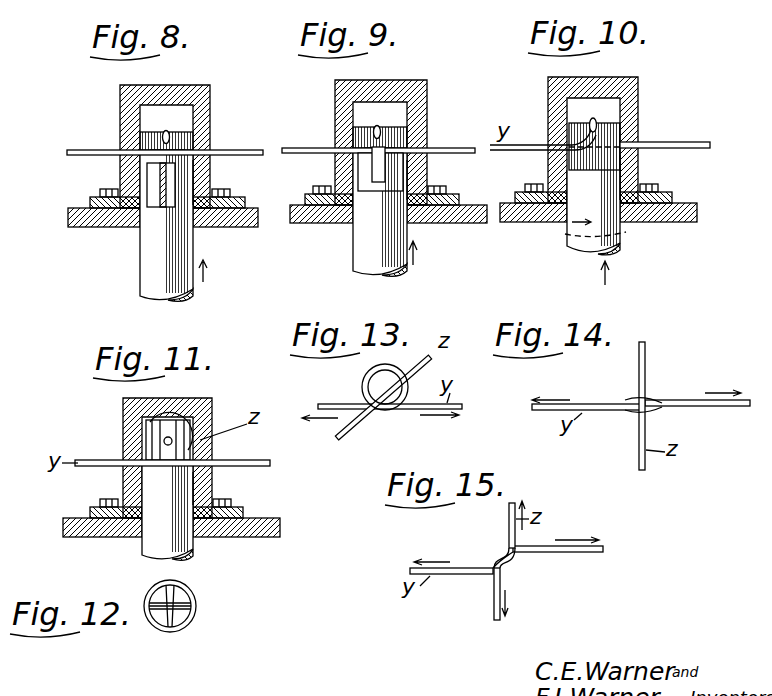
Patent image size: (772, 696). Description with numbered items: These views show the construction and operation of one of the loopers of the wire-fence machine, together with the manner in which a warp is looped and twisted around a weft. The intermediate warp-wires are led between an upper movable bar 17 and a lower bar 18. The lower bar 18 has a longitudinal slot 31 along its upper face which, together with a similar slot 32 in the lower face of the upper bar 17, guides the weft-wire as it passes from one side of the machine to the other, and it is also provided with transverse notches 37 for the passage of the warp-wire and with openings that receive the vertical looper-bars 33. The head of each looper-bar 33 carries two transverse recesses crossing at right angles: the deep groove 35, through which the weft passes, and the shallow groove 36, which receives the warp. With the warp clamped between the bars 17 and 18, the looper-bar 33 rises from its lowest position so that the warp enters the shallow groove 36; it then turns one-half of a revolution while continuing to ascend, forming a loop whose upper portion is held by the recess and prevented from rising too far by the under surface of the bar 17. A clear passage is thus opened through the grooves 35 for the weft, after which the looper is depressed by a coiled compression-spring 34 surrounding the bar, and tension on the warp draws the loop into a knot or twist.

In FIG. 8, the upper movable bar 17 is at (207, 91).
In FIG. 9, the upper movable bar 17 is at (424, 87).
In FIG. 10, the upper movable bar 17 is at (634, 82).
In FIG. 11, the upper movable bar 17 is at (209, 405).
In FIG. 8, the lower bar 18 is at (130, 175).
In FIG. 9, the lower bar 18 is at (338, 168).
In FIG. 10, the lower bar 18 is at (553, 166).
In FIG. 11, the lower bar 18 is at (124, 490).
In FIG. 8, the longitudinal slot 31 is at (170, 141).
In FIG. 9, the longitudinal slot 31 is at (388, 134).
In FIG. 8, the slot 32 is at (170, 135).
In FIG. 9, the slot 32 is at (380, 130).
In FIG. 8, the looper-bar 33 is at (150, 273).
In FIG. 9, the looper-bar 33 is at (362, 248).
In FIG. 10, the looper-bar 33 is at (595, 212).
In FIG. 11, the looper-bar 33 is at (160, 540).
In FIG. 12, the looper-bar 33 is at (197, 598).
In FIG. 8, the coiled compression-spring 34 is at (203, 178).
In FIG. 9, the coiled compression-spring 34 is at (412, 168).
In FIG. 10, the coiled compression-spring 34 is at (640, 163).
In FIG. 11, the coiled compression-spring 34 is at (212, 462).
In FIG. 8, the deep transverse recess 35 is at (161, 200).
In FIG. 9, the deep transverse recess 35 is at (355, 207).
In FIG. 11, the deep transverse recess 35 is at (150, 438).
In FIG. 12, the deep transverse recess 35 is at (176, 630).
In FIG. 8, the shallow groove 36 is at (166, 129).
In FIG. 9, the shallow groove 36 is at (380, 123).
In FIG. 10, the shallow groove 36 is at (594, 131).
In FIG. 11, the shallow groove 36 is at (122, 412).
In FIG. 12, the shallow groove 36 is at (194, 608).
In FIG. 8, the transverse notch 37 is at (123, 151).
In FIG. 9, the transverse notch 37 is at (378, 137).
In FIG. 10, the transverse notch 37 is at (630, 145).
In FIG. 11, the transverse notch 37 is at (218, 470).